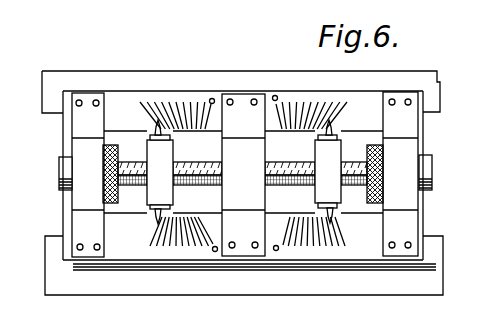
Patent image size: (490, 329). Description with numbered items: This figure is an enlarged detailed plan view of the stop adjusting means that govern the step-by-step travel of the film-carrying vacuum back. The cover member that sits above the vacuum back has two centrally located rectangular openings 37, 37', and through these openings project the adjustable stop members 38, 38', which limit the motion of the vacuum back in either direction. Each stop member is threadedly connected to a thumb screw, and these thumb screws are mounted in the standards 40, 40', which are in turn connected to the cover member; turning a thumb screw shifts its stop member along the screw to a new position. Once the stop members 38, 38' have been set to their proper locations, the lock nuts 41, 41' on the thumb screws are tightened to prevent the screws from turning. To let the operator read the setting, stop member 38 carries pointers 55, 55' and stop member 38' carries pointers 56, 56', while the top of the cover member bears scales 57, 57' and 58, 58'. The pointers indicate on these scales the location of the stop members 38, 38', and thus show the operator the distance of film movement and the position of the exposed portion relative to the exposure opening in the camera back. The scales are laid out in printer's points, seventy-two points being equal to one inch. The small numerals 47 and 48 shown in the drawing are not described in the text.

The rectangular opening 37 is at (236, 175).
The rectangular opening 37' is at (243, 225).
The adjustable stop member 38 is at (93, 191).
The adjustable stop member 38' is at (365, 156).
The standard 40 is at (57, 175).
The standard 40' is at (426, 174).
The lock nut 41 is at (65, 182).
The lock nut 41' is at (415, 158).
The upper needle points 47 is at (155, 124).
The lower needle points 48 is at (157, 226).
The pointer 55 is at (131, 92).
The pointer 55' is at (127, 250).
The pointer 56 is at (366, 102).
The pointer 56' is at (358, 249).
The scale 57 is at (177, 86).
The scale 57' is at (175, 271).
The scale 58 is at (310, 87).
The scale 58' is at (310, 269).